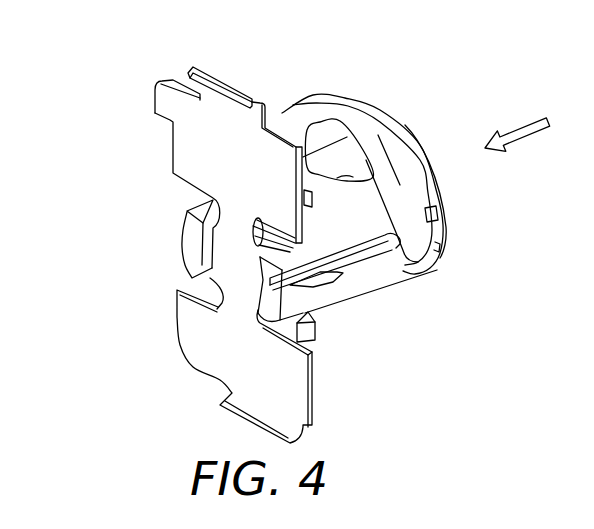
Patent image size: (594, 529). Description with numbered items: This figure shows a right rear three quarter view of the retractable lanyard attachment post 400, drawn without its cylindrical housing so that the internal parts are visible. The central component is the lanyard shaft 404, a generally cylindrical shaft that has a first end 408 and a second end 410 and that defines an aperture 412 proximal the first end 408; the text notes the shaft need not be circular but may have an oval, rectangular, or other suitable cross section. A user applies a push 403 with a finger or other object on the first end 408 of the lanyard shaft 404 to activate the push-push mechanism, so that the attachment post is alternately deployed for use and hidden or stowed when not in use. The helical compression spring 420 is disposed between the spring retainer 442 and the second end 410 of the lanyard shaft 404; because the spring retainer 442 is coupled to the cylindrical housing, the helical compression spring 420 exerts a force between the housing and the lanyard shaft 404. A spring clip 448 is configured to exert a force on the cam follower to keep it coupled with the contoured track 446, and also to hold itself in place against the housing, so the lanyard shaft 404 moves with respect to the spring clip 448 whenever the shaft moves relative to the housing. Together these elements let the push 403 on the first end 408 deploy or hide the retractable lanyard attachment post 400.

The retractable lanyard attachment post 400 is at (60, 83).
The spring retainer 442 is at (168, 145).
The second end 410 is at (183, 247).
The helical compression spring 420 is at (275, 217).
The spring clip 448 is at (320, 95).
The first end 408 is at (423, 150).
The aperture 412 is at (353, 160).
The lanyard shaft 404 is at (442, 212).
The contoured track 446 is at (383, 267).
The push 403 is at (520, 122).